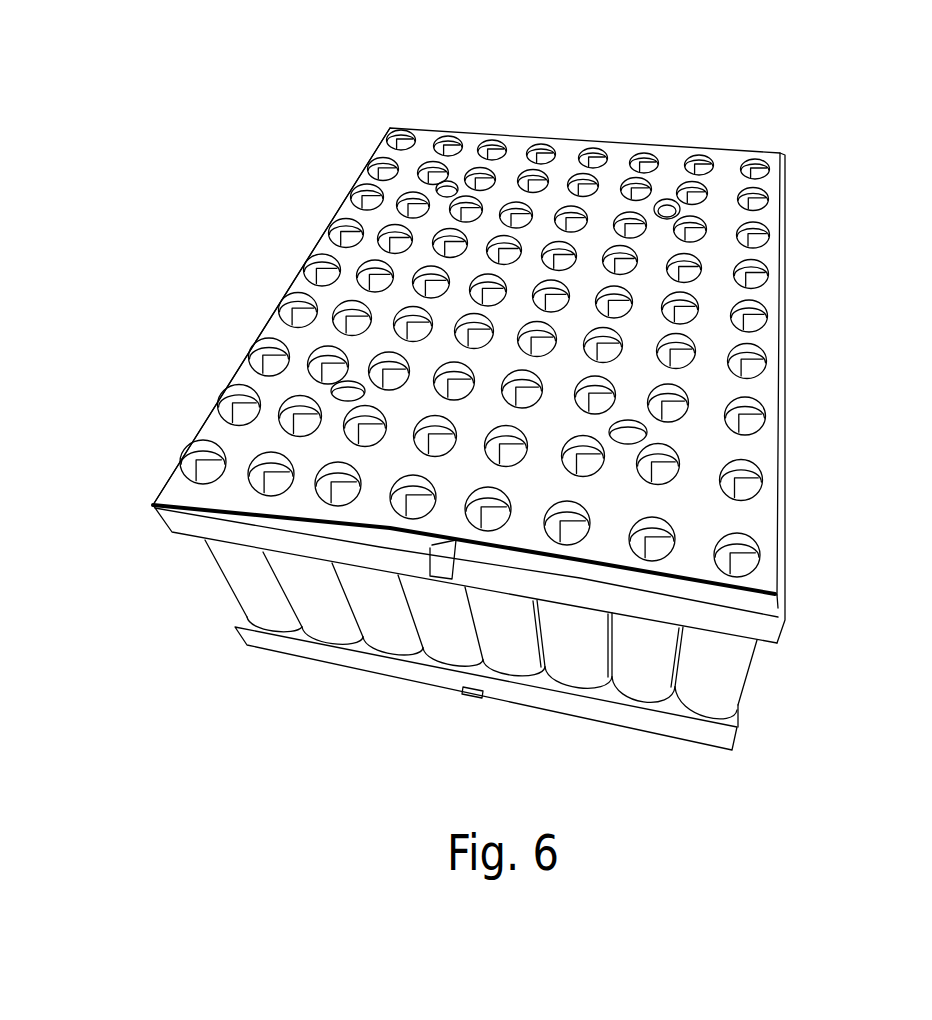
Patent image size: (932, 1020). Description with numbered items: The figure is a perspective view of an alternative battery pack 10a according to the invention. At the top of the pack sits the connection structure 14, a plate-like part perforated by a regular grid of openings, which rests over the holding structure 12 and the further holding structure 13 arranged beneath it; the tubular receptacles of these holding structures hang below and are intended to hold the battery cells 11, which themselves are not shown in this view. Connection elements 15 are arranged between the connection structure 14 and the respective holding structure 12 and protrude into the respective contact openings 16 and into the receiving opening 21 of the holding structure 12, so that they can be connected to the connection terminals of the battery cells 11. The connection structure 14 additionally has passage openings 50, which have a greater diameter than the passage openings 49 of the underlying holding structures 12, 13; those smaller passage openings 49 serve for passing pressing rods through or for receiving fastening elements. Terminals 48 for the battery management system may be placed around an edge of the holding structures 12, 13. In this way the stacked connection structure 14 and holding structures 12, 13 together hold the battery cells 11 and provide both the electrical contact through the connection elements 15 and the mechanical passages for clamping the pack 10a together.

The battery pack 10a is at (308, 177).
The battery cells 11 is at (237, 575).
The holding structure 12 is at (776, 610).
The holding structure 13 is at (742, 714).
The connection structure 14 is at (765, 527).
The connection elements 15 is at (752, 418).
The contact openings 16 is at (758, 476).
The receiving opening 21 is at (247, 347).
The terminals 48 is at (787, 340).
The passage openings 49 is at (680, 212).
The passage openings 50 is at (664, 200).